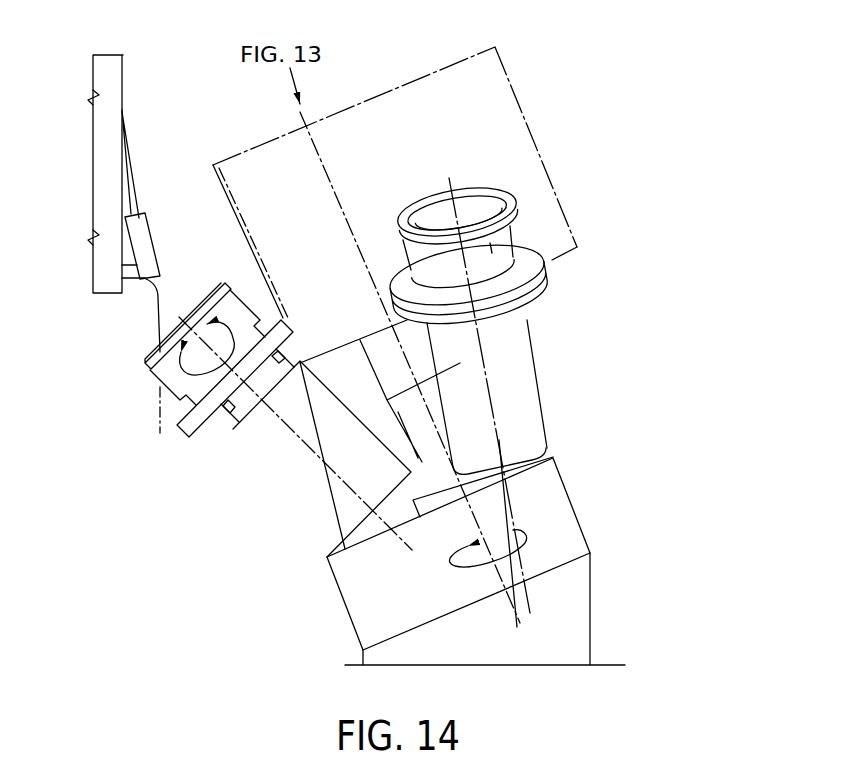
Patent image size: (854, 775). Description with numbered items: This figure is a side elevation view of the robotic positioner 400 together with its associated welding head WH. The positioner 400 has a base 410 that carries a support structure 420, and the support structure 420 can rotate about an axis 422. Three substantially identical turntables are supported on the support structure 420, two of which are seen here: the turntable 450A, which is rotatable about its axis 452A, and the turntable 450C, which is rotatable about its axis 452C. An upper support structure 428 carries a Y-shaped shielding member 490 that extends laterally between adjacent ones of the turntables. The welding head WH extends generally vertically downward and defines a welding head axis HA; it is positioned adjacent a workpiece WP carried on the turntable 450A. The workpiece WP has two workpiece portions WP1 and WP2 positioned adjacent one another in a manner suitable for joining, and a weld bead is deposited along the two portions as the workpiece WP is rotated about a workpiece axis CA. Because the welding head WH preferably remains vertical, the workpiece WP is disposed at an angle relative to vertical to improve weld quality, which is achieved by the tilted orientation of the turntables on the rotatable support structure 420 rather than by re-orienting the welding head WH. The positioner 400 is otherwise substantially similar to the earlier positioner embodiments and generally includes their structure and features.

The welding head WH is at (133, 294).
The workpiece WP is at (528, 212).
The workpiece portion WP1 is at (424, 192).
The workpiece portion WP2 is at (472, 194).
The Y-shaped shielding member 490 is at (506, 135).
The turntable 450C is at (548, 271).
The axis of rotation 452C is at (480, 337).
The support structure 420 is at (418, 418).
The robotic positioner 400 is at (282, 536).
The axis 422 is at (497, 573).
The base 410 is at (596, 617).
The workpiece axis CA is at (180, 332).
The turntable 450A is at (190, 439).
The welding head axis HA is at (158, 424).
The upper support structure 428 is at (333, 381).
The axis of rotation 452A is at (400, 543).